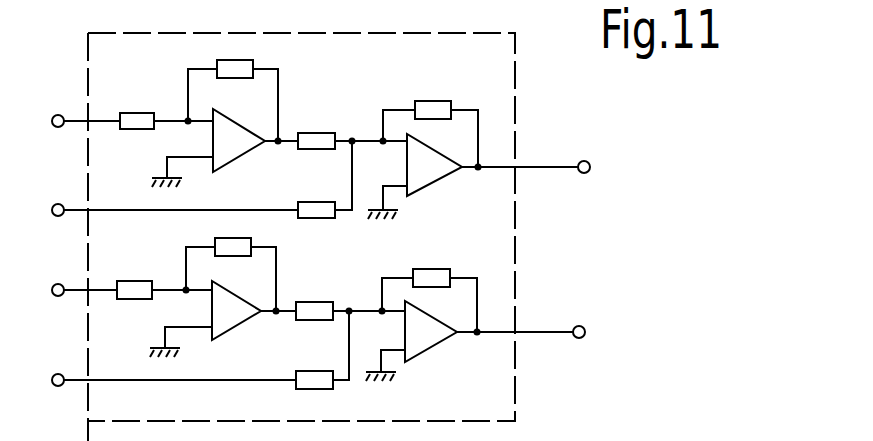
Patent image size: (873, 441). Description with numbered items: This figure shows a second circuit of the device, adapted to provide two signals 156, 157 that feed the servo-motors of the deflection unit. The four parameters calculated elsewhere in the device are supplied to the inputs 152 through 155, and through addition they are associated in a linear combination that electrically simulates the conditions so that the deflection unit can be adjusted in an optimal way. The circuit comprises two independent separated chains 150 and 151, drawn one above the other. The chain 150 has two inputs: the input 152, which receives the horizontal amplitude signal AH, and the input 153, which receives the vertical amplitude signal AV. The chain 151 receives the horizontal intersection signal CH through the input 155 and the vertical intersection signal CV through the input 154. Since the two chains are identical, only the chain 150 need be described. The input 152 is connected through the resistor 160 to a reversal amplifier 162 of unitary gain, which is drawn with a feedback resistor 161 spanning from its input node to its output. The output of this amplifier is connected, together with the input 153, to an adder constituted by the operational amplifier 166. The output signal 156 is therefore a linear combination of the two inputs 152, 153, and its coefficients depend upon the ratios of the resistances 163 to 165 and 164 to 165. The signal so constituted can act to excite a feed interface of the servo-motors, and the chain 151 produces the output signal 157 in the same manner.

The chain 150 is at (358, 106).
The chain 151 is at (330, 290).
The input 152 is at (52, 117).
The input 153 is at (52, 206).
The input 154 is at (52, 287).
The input 155 is at (52, 376).
The output signal 156 is at (581, 161).
The output signal 157 is at (579, 326).
The resistor 160 is at (138, 113).
The feedback resistor 161 is at (246, 60).
The reversal amplifier 162 is at (234, 121).
The resistance 163 is at (304, 134).
The resistance 164 is at (312, 202).
The resistance 165 is at (441, 101).
The operational amplifier 166 is at (435, 182).